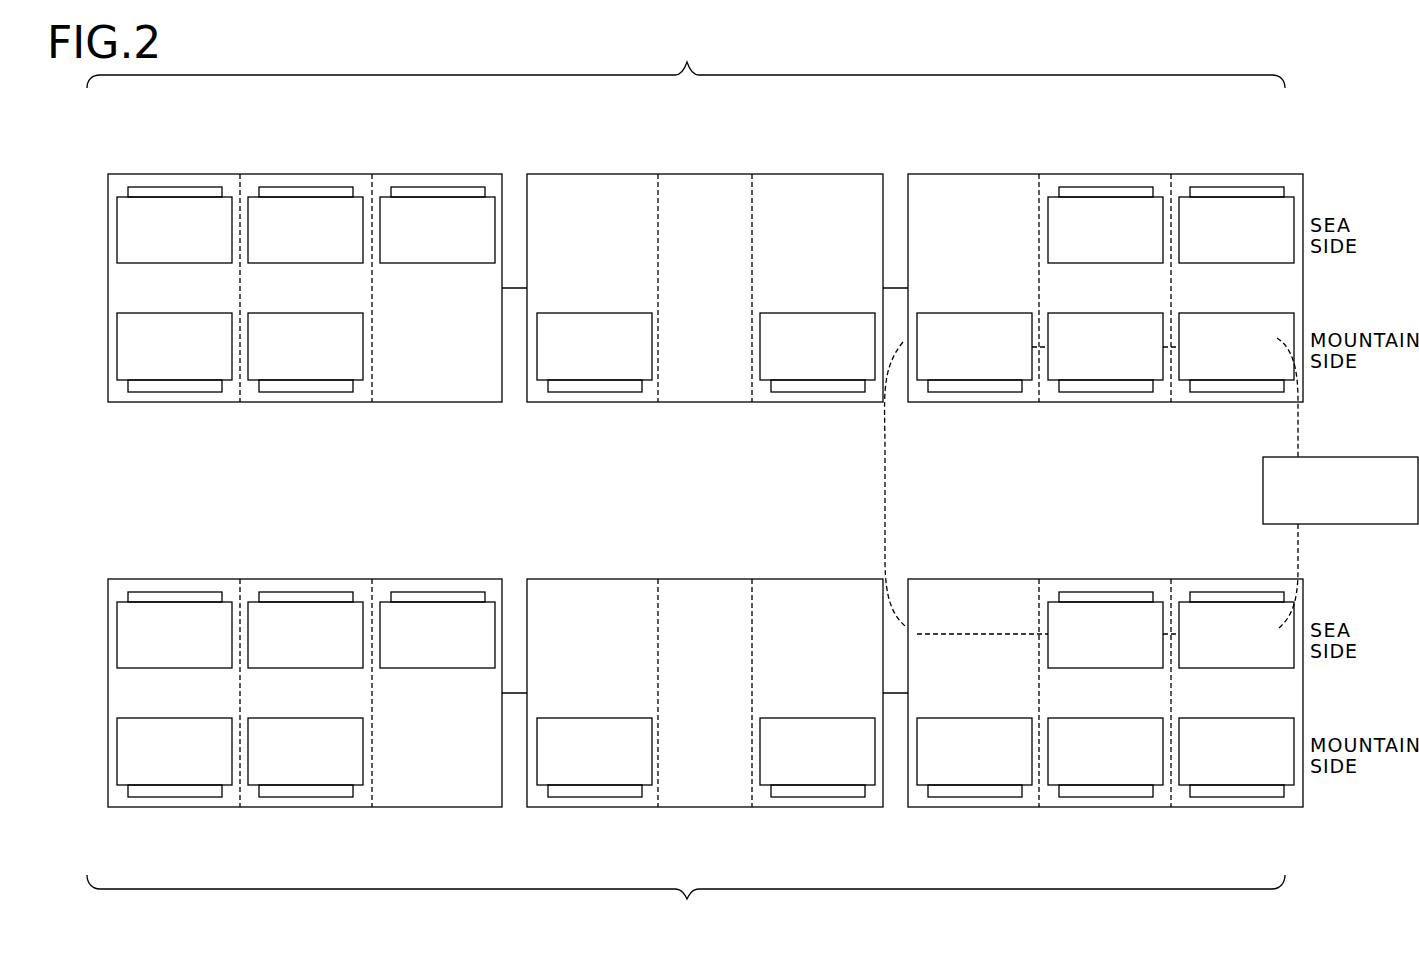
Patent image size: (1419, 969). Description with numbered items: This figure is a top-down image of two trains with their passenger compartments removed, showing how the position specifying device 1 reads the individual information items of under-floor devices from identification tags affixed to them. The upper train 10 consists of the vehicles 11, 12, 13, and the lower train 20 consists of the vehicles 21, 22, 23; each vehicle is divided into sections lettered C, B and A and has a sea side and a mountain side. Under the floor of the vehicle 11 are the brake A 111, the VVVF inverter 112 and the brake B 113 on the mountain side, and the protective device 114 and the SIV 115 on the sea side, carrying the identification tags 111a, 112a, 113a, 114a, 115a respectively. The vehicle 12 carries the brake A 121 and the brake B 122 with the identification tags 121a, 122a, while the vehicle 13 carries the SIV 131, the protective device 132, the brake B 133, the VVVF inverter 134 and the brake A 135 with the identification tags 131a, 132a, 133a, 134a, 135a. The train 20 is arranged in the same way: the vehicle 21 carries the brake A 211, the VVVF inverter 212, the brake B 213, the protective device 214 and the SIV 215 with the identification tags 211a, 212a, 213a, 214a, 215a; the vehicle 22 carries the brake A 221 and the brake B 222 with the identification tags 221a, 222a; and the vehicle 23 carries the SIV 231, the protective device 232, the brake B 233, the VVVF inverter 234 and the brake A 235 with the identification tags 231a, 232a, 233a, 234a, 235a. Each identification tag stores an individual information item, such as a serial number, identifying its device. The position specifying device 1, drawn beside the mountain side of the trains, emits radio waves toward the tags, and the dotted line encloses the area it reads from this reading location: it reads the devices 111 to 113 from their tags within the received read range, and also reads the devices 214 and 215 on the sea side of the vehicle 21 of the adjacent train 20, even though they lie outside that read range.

The position specifying device 1 is at (1371, 458).
The train 10 is at (686, 64).
The train 20 is at (686, 903).
The vehicle 11 is at (929, 174).
The vehicle 12 is at (554, 174).
The vehicle 13 is at (464, 174).
The vehicle 21 is at (927, 579).
The vehicle 22 is at (554, 579).
The vehicle 23 is at (464, 579).
The device (brake A) 111 is at (1183, 380).
The identification tag 111a is at (1224, 392).
The device (VVVF inverter) 112 is at (1052, 380).
The identification tag 112a is at (1092, 392).
The device (brake B) 113 is at (920, 380).
The identification tag 113a is at (962, 392).
The device (protective device) 114 is at (1182, 197).
The identification tag 114a is at (1223, 187).
The device (SIV) 115 is at (1051, 197).
The identification tag 115a is at (1094, 187).
The device (brake A) 121 is at (763, 380).
The identification tag 121a is at (805, 392).
The device (brake B) 122 is at (540, 380).
The identification tag 122a is at (581, 392).
The device (SIV) 131 is at (250, 380).
The identification tag 131a is at (292, 392).
The device (protective device) 132 is at (120, 380).
The identification tag 132a is at (160, 392).
The device (brake B) 133 is at (383, 197).
The identification tag 133a is at (423, 187).
The device (VVVF inverter) 134 is at (251, 197).
The identification tag 134a is at (293, 187).
The device (brake A) 135 is at (120, 197).
The identification tag 135a is at (163, 187).
The device (brake A) 211 is at (1168, 773).
The identification tag 211a is at (1210, 797).
The device (VVVF inverter) 212 is at (1038, 778).
The identification tag 212a is at (1080, 797).
The device (brake B) 213 is at (916, 784).
The identification tag 213a is at (948, 797).
The device (protective device) 214 is at (1170, 602).
The identification tag 214a is at (1209, 592).
The device (SIV) 215 is at (1038, 602).
The identification tag 215a is at (1079, 592).
The device (brake A) 221 is at (763, 785).
The identification tag 221a is at (805, 797).
The device (brake B) 222 is at (540, 785).
The identification tag 222a is at (581, 797).
The device (SIV) 231 is at (250, 785).
The identification tag 231a is at (292, 797).
The device (protective device) 232 is at (120, 785).
The identification tag 232a is at (160, 797).
The device (brake B) 233 is at (383, 602).
The identification tag 233a is at (423, 592).
The device (VVVF inverter) 234 is at (251, 602).
The identification tag 234a is at (293, 592).
The device (brake A) 235 is at (120, 602).
The identification tag 235a is at (163, 592).